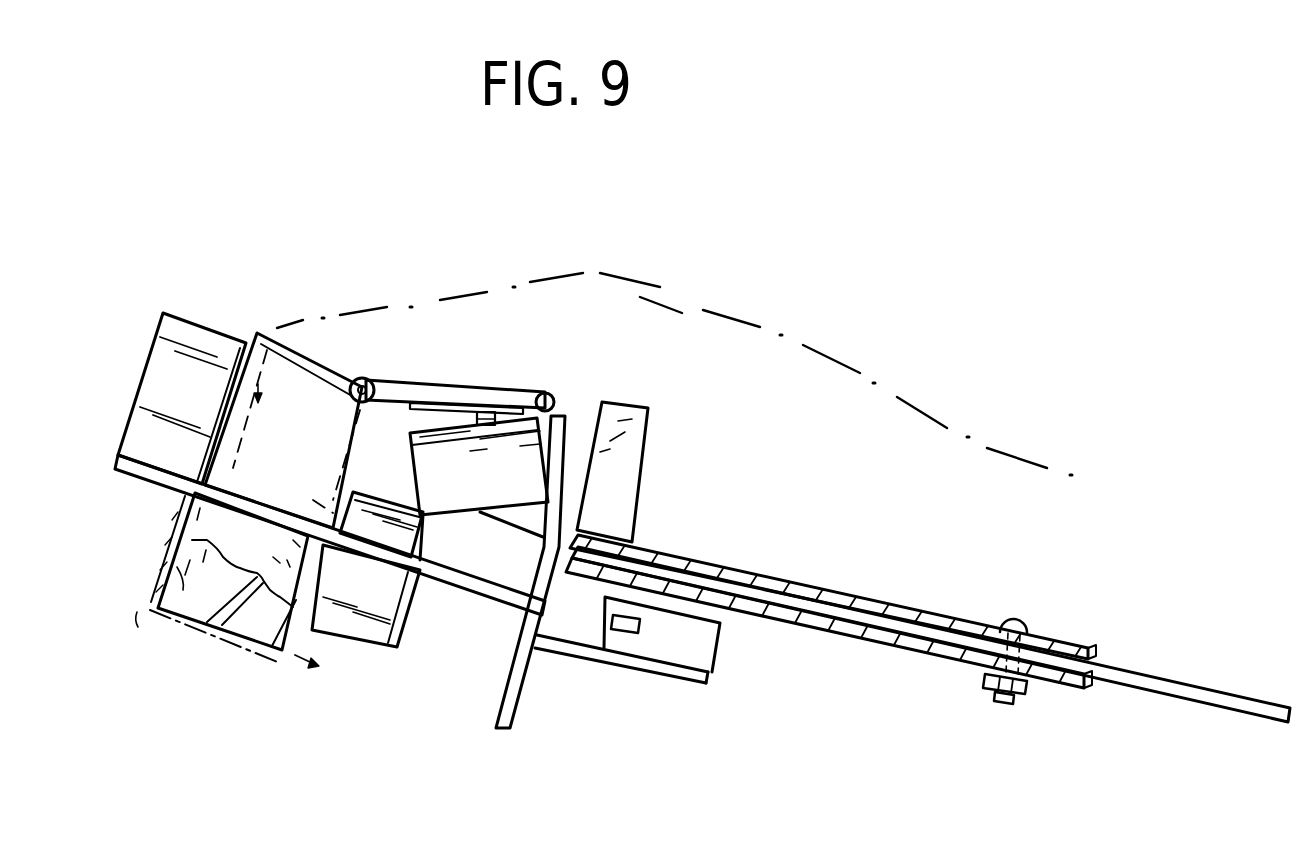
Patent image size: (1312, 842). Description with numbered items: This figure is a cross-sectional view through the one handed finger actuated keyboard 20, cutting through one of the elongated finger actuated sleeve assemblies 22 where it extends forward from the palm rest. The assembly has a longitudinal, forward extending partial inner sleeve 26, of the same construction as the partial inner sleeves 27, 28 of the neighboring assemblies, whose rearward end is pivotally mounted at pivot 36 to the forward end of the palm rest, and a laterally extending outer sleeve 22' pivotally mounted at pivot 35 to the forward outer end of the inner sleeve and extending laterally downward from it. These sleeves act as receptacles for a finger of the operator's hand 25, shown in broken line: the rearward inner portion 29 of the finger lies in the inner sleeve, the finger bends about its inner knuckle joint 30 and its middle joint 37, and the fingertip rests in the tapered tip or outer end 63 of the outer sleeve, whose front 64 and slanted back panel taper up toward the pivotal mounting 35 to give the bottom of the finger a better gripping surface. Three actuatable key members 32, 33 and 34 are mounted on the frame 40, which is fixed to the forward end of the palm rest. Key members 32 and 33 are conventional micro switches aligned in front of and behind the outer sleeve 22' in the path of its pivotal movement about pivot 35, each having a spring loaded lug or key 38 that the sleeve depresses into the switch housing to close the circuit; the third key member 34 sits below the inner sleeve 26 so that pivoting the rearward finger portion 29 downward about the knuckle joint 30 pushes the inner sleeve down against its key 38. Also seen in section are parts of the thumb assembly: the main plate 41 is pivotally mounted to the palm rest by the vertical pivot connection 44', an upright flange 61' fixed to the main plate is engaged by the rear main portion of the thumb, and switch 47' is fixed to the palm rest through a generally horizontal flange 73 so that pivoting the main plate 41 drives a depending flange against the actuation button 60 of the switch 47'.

The one handed finger actuated keyboard 20 is at (912, 597).
The finger actuated sleeve assembly 22 is at (197, 567).
The outer sleeve 22' is at (199, 639).
The operator's hand 25 is at (843, 357).
The partial inner sleeve 26 is at (472, 392).
The partial inner sleeve 27 is at (498, 392).
The partial inner sleeve 28 is at (548, 382).
The rearward inner portion of finger 29 is at (487, 291).
The inner knuckle joint 30 is at (563, 276).
The key member 32 is at (138, 392).
The key member 33 is at (373, 640).
The third key member 34 is at (458, 497).
The pivot 35 is at (373, 379).
The rearward end pivot 36 is at (568, 398).
The middle joint of finger 37 is at (344, 317).
The movable lug or key 38 is at (214, 437).
The frame 40 is at (820, 588).
The main plate 41 is at (823, 630).
The vertical pivot connection 44' is at (1035, 643).
The switch 47' is at (659, 640).
The actuation button 60 is at (622, 626).
The upright flange 61' is at (655, 472).
The tip or outer end of finger sleeve 63 is at (177, 567).
The sleeve front / slanted back panel 64 is at (228, 633).
The horizontal flange 73 is at (570, 655).